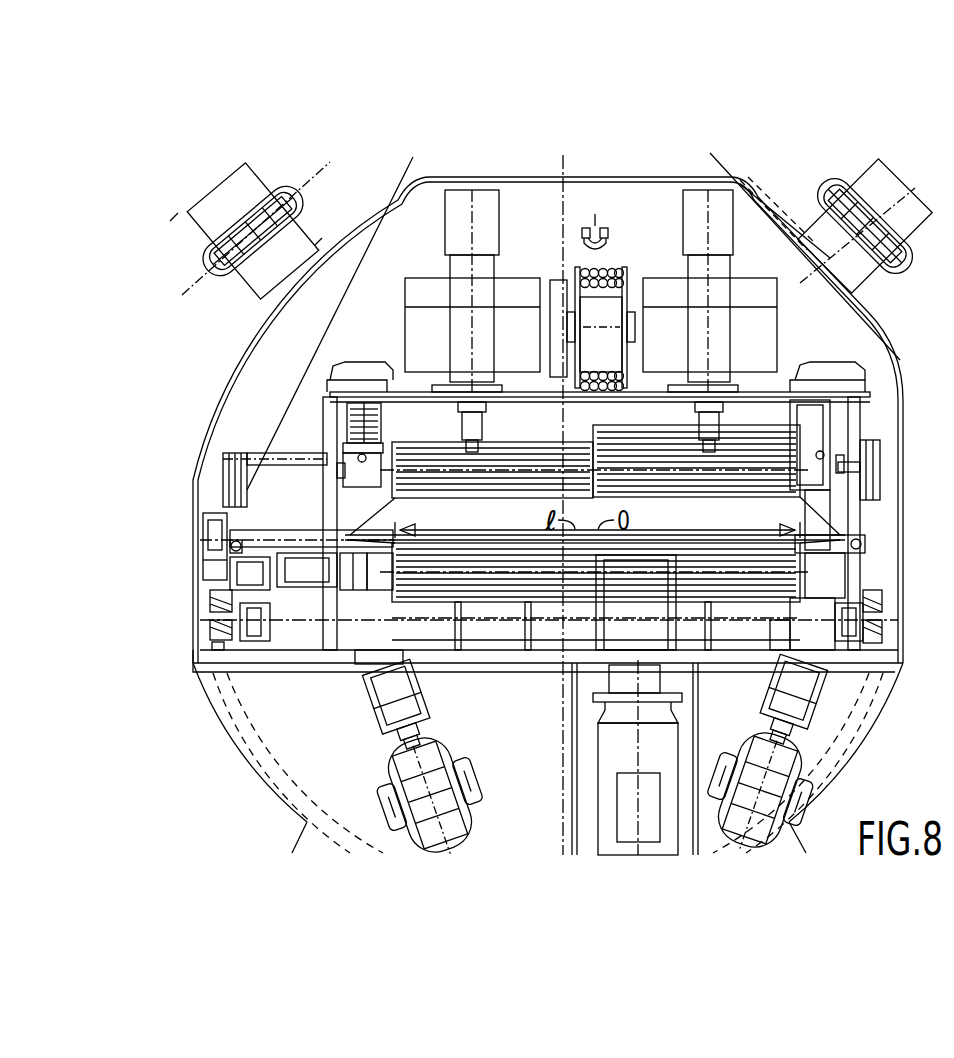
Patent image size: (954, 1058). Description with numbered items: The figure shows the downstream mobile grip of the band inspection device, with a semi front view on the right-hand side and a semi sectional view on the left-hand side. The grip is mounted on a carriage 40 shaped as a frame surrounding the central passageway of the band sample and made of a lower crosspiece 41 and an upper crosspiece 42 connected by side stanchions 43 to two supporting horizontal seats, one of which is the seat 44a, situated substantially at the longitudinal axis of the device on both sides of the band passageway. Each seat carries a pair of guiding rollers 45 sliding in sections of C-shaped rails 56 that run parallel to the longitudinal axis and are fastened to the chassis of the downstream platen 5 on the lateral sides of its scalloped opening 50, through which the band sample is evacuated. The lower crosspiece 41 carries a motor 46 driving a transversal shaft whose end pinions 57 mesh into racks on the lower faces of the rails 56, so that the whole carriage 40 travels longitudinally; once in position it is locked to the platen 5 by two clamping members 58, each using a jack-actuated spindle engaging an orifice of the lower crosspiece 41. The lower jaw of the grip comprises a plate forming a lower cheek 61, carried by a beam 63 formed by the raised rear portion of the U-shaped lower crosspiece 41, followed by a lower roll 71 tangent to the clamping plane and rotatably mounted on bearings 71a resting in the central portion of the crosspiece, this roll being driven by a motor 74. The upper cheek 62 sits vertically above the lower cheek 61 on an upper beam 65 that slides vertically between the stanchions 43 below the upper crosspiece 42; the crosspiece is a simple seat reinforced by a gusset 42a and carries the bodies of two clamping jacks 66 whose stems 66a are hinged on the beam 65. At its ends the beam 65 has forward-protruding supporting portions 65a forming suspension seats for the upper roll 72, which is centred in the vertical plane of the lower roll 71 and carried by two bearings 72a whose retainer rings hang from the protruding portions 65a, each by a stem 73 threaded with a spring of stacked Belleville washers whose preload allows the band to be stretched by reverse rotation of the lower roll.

The downstream rotary platen 5 is at (337, 218).
The opening of the downstream platen 50 is at (383, 250).
The gusset 42a is at (633, 405).
The upper crosspiece 42 is at (785, 415).
The clamping jacks 66 is at (715, 267).
The stems of the clamping jacks 66a is at (745, 430).
The carriage 40 is at (305, 405).
The upper roll 72 is at (435, 410).
The supporting portions 65a is at (430, 455).
The upper beam 65 is at (767, 447).
The stem 73 is at (330, 440).
The side stanchions 43 is at (218, 472).
The bearings of the upper roll 72a is at (283, 537).
The supporting horizontal seat 44a is at (258, 527).
The guiding rollers 45 is at (228, 552).
The C-shaped rails 56 is at (275, 562).
The motor 74 is at (263, 577).
The pinions 57 is at (240, 650).
The lower crosspiece 41 is at (335, 657).
The lower roll 71 is at (392, 670).
The clamping members 58 is at (403, 775).
The motor 46 is at (630, 796).
The upper cheek 62 is at (820, 495).
The lower cheek 61 is at (800, 533).
The bearings of the lower roll 71a is at (838, 565).
The beam 63 is at (767, 580).